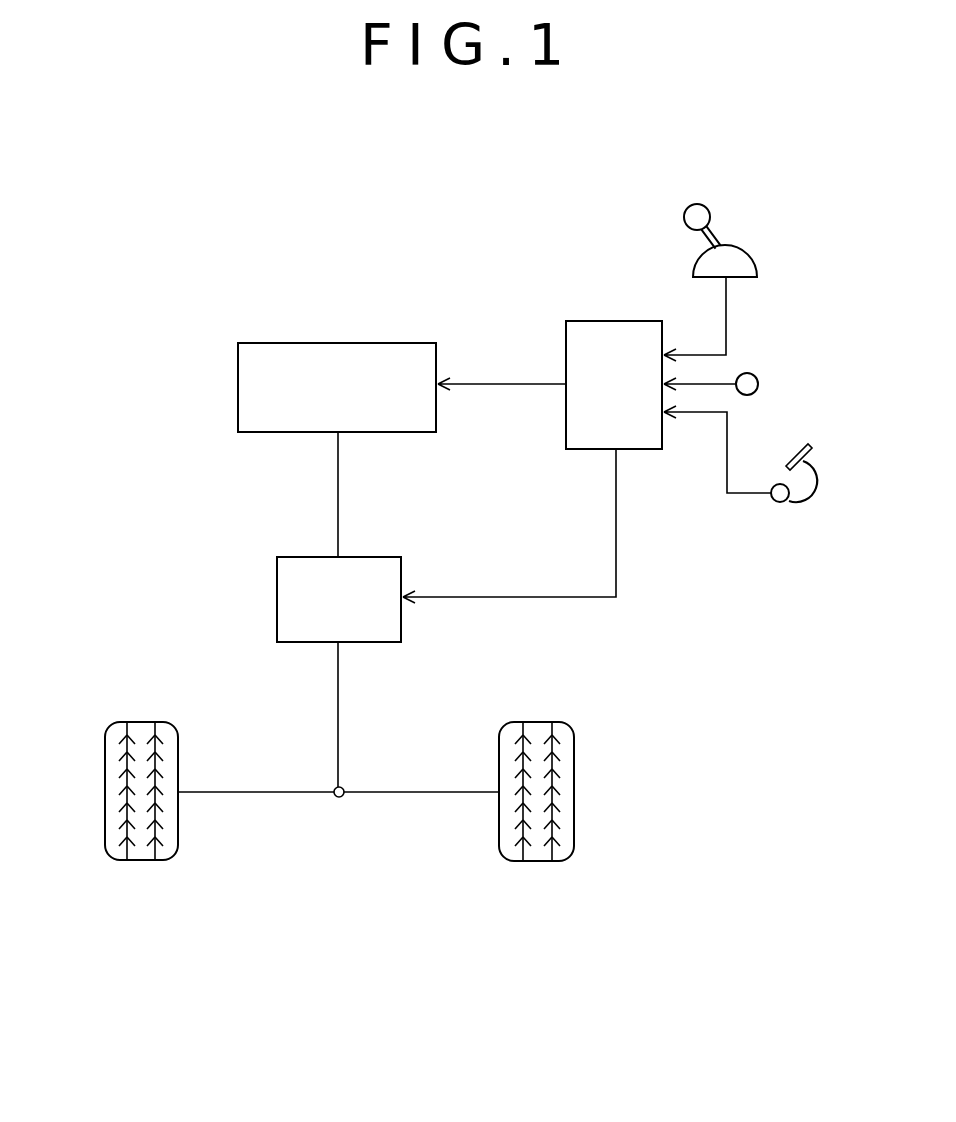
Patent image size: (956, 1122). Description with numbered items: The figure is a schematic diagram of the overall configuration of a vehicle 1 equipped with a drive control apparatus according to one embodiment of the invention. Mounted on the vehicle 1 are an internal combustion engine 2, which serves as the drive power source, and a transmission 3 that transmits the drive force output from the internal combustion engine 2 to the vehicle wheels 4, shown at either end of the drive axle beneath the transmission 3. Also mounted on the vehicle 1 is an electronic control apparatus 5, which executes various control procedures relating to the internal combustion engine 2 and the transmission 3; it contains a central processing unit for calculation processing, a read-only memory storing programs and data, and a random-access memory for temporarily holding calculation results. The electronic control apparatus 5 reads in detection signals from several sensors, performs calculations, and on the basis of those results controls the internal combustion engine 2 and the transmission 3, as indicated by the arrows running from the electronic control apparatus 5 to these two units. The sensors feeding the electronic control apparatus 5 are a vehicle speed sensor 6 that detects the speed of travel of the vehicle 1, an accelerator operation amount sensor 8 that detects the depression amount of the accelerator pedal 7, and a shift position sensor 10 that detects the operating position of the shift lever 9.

The vehicle 1 is at (225, 283).
The internal combustion engine 2 is at (399, 343).
The transmission 3 is at (298, 557).
The vehicle wheels 4 is at (105, 749).
The electronic control apparatus 5 is at (594, 321).
The vehicle speed sensor 6 is at (755, 368).
The accelerator pedal 7 is at (813, 442).
The accelerator operation amount sensor 8 is at (773, 484).
The shift lever 9 is at (710, 205).
The shift position sensor 10 is at (752, 255).